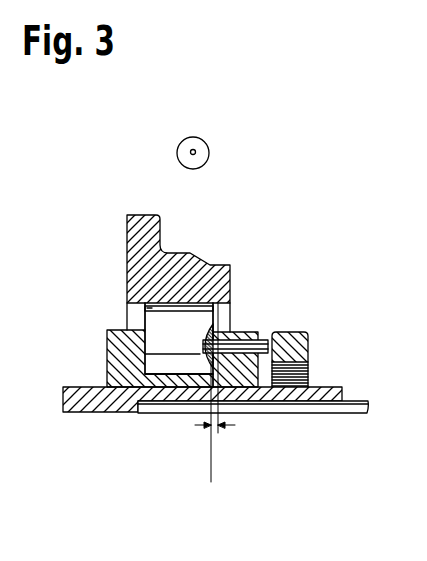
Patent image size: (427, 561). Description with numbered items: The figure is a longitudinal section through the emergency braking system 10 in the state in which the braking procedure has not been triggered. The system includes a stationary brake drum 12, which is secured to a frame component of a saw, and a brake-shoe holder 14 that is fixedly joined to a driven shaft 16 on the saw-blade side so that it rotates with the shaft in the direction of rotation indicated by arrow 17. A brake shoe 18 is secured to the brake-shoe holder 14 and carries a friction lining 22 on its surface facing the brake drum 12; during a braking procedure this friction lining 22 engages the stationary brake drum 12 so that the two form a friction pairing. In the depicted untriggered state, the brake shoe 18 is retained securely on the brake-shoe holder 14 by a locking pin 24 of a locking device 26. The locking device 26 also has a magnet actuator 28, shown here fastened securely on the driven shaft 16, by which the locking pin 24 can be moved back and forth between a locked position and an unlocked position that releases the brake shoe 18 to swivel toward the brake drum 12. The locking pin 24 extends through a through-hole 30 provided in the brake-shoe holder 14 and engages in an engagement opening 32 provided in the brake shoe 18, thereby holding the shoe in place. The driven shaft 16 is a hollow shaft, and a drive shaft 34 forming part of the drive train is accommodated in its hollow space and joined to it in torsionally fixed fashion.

The emergency braking system 10 is at (288, 197).
The brake drum 12 is at (137, 225).
The brake-shoe holder 14 is at (130, 347).
The driven shaft 16 is at (76, 403).
The arrow 17 is at (182, 144).
The brake shoe 18 is at (155, 321).
The friction lining 22 is at (145, 308).
The locking pin 24 is at (247, 338).
The locking device 26 is at (290, 297).
The magnet actuator 28 is at (306, 336).
The through-hole 30 is at (248, 355).
The engagement opening 32 is at (157, 362).
The drive shaft 34 is at (307, 408).